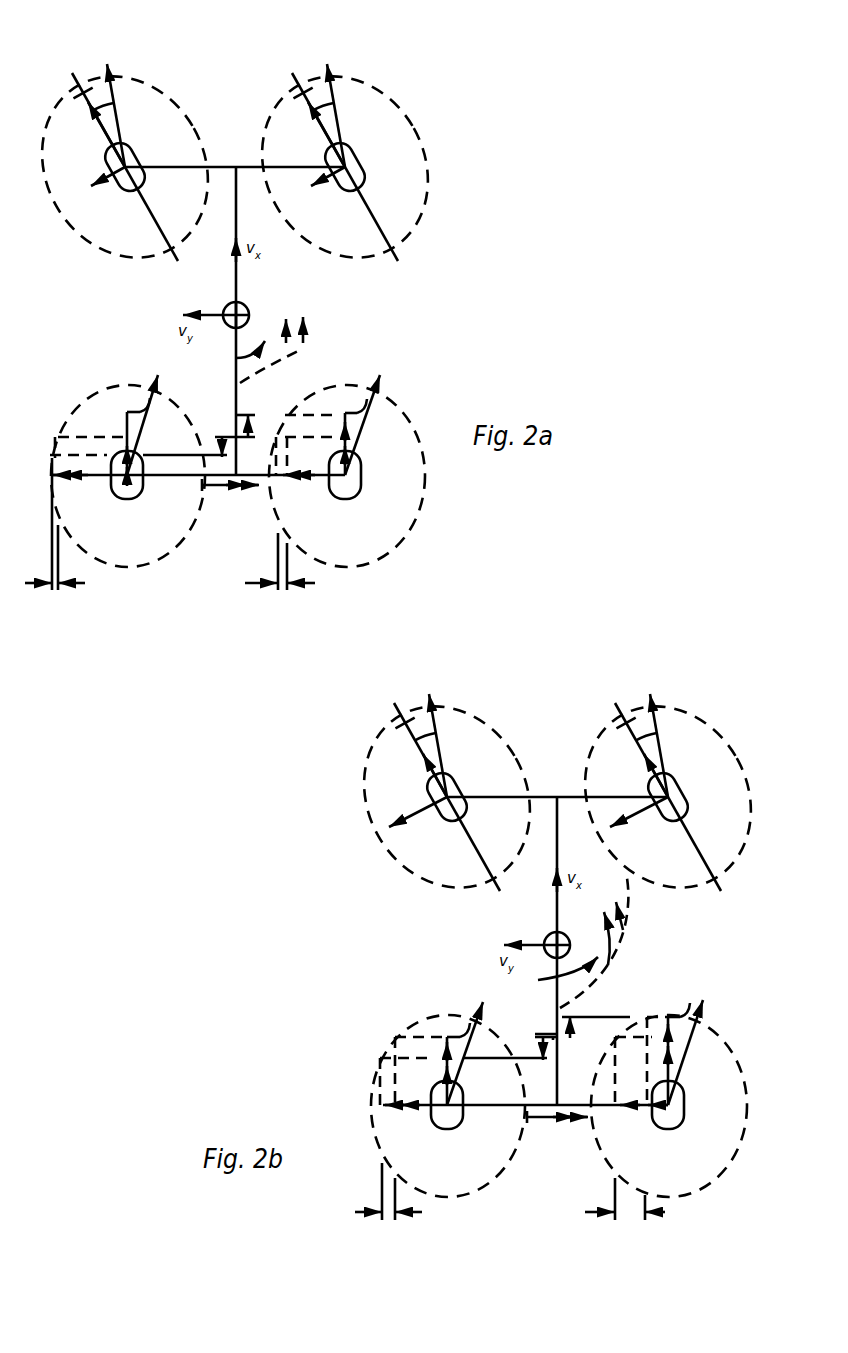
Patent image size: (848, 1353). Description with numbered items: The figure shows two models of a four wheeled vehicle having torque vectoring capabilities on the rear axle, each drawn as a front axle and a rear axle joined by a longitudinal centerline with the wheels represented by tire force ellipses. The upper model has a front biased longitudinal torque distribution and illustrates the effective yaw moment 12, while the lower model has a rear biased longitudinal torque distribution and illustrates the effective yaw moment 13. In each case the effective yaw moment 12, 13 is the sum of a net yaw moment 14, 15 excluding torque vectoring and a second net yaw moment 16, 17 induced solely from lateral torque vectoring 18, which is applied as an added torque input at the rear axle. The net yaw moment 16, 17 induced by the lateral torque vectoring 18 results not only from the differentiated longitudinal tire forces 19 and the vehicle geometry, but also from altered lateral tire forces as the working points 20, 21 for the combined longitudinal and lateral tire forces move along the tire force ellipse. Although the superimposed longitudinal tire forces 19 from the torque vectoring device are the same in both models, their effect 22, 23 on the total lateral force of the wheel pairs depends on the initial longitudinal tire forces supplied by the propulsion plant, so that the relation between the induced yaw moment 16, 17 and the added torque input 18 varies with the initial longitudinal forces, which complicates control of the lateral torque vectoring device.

In FIG. 2A, the effective yaw moment 12 is at (292, 349).
In FIG. 2B, the effective yaw moment 13 is at (633, 952).
In FIG. 2A, the net yaw moment 14 is at (233, 347).
In FIG. 2B, the net yaw moment 15 is at (562, 984).
In FIG. 2A, the second net yaw moment 16 is at (276, 352).
In FIG. 2B, the second net yaw moment 17 is at (607, 930).
In FIG. 2A, the lateral torque vectoring 18 is at (238, 520).
In FIG. 2B, the lateral torque vectoring 18 is at (560, 1160).
In FIG. 2A, the differentiated longitudinal tire forces 19 is at (242, 407).
In FIG. 2B, the differentiated longitudinal tire forces 19 is at (553, 1037).
In FIG. 2A, the working points 20 is at (270, 120).
In FIG. 2B, the working points 21 is at (583, 784).
In FIG. 2A, the effect on total lateral force 22 is at (278, 595).
In FIG. 2B, the effect on total lateral force 23 is at (630, 1225).